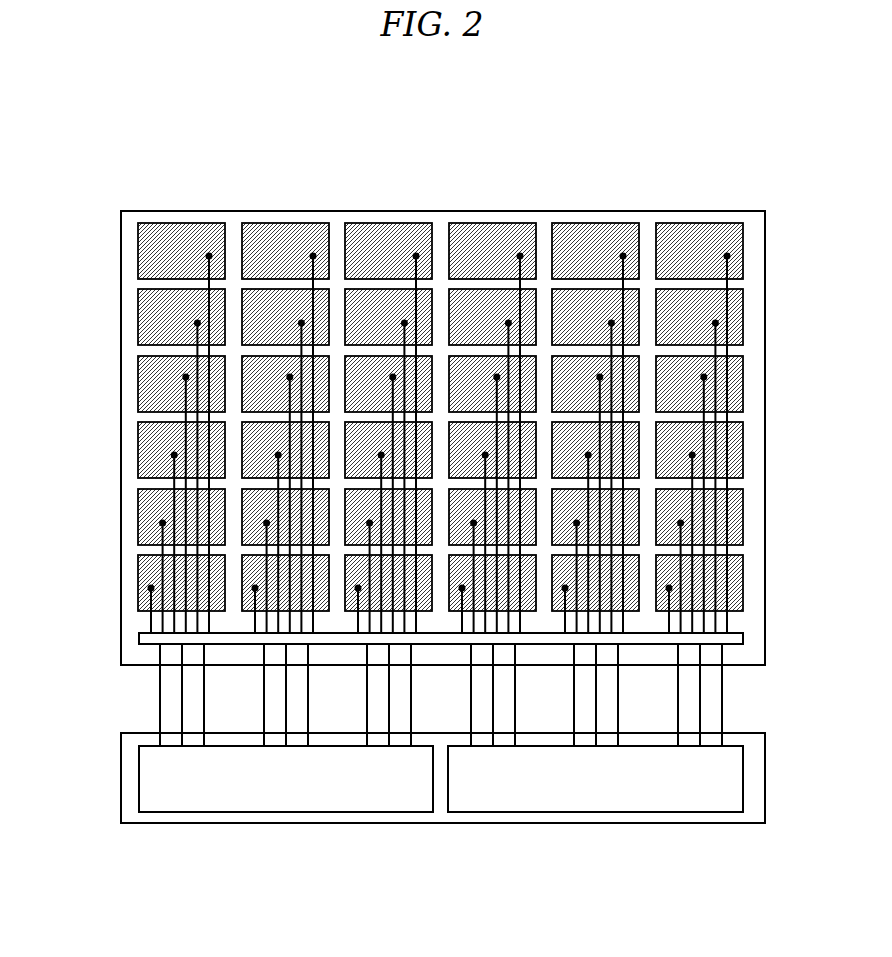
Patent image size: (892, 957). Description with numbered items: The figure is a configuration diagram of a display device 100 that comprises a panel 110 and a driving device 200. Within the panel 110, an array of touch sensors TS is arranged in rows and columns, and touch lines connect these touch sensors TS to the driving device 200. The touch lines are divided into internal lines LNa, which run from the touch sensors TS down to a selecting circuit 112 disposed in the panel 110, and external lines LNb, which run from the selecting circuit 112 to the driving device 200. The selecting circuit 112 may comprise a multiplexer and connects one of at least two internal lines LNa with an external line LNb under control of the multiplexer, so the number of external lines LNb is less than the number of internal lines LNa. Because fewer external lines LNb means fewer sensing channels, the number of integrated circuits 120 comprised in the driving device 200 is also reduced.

The display device 100 is at (177, 127).
The panel 110 is at (432, 211).
The touch sensors TS is at (138, 250).
The internal lines LNa is at (152, 625).
The selecting circuit 112 is at (743, 633).
The external lines LNb is at (160, 712).
The integrated circuits 120 is at (297, 812).
The driving device 200 is at (440, 823).